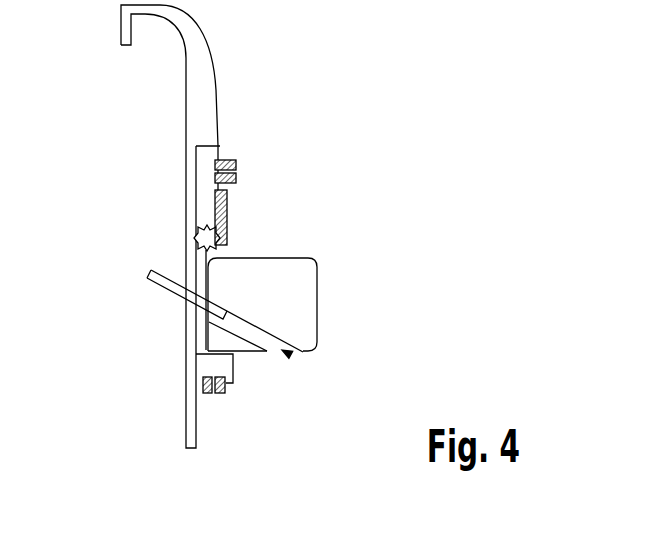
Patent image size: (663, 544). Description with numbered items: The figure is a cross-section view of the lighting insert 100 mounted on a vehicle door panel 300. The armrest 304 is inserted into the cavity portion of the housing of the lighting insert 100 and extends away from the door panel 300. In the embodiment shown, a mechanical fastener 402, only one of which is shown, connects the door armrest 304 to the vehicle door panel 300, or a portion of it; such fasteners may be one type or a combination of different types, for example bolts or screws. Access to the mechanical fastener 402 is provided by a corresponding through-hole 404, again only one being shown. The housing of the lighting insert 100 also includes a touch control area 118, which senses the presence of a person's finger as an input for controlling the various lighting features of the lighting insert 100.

The vehicle door panel 300 is at (208, 58).
The lighting insert 100 is at (220, 150).
The touch control area 118 is at (228, 205).
The armrest 304 is at (320, 287).
The mechanical fastener 402 is at (155, 288).
The through-hole 404 is at (291, 355).